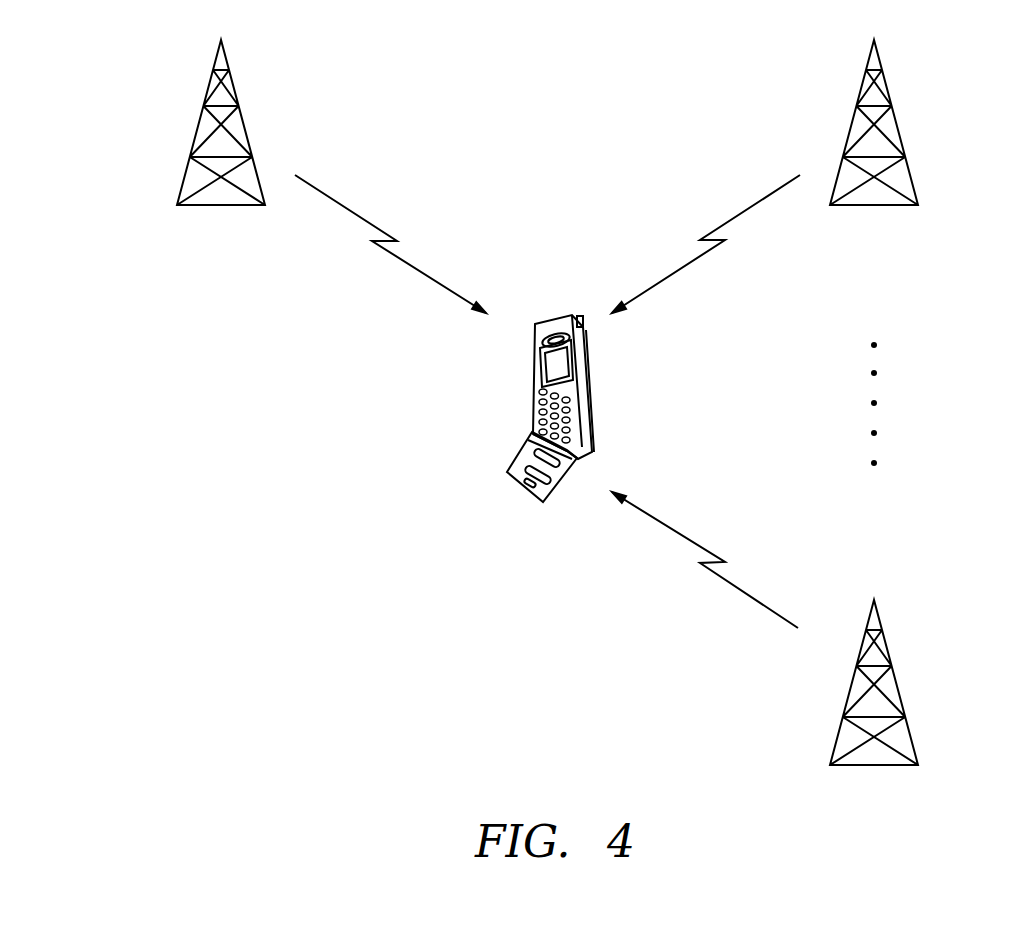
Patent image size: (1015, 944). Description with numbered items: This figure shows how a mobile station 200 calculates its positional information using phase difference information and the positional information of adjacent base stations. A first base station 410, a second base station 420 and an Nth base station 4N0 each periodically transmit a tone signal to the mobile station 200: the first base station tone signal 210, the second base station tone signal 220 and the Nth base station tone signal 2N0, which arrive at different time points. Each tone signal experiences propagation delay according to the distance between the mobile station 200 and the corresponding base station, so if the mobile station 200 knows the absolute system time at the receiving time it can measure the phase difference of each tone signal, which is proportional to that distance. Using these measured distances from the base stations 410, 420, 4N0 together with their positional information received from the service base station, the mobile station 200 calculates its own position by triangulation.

The first base station 410 is at (190, 138).
The second base station 420 is at (903, 133).
The Nth base station 4N0 is at (903, 693).
The mobile station 200 is at (586, 408).
The first base station tone signal 210 is at (387, 253).
The second base station tone signal 220 is at (710, 250).
The Nth base station tone signal 2N0 is at (715, 577).